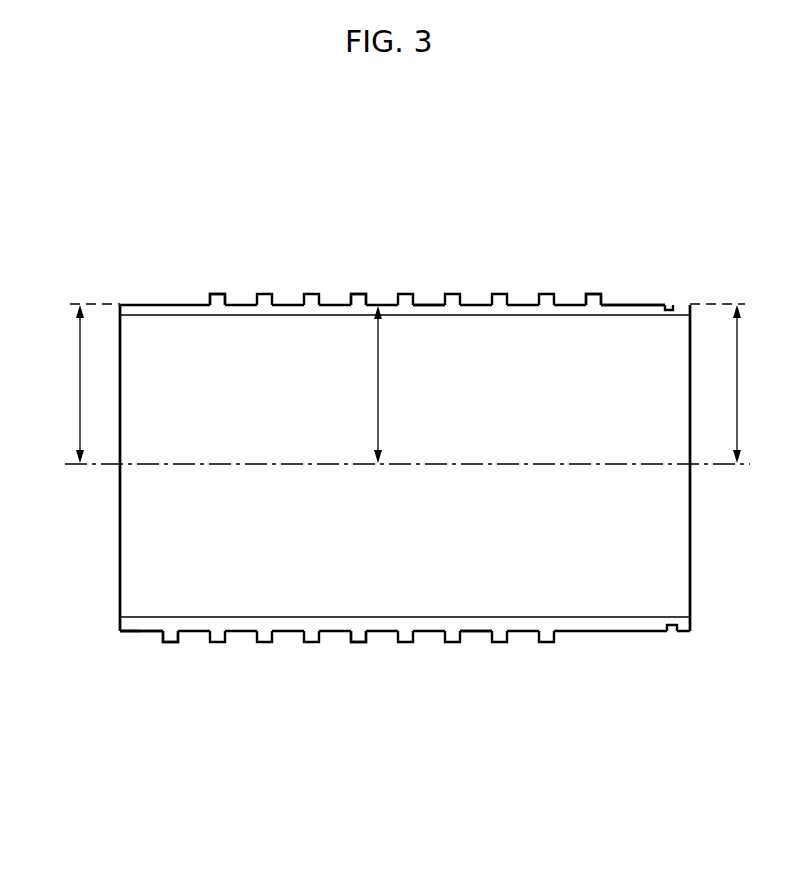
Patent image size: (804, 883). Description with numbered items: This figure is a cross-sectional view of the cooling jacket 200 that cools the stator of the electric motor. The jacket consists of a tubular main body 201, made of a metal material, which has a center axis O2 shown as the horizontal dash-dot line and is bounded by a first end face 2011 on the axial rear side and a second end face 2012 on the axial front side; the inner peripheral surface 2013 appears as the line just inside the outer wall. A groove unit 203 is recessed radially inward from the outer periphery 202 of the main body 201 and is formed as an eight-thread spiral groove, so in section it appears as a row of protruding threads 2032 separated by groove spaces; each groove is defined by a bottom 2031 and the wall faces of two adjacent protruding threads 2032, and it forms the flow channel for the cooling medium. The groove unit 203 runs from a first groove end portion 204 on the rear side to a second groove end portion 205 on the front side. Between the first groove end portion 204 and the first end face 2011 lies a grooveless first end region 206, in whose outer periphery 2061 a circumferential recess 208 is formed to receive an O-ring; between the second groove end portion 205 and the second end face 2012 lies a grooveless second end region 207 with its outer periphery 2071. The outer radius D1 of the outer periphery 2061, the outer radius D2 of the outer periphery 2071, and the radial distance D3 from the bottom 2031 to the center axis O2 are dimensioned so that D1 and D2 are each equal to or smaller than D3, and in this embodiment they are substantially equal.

The cooling jacket 200 is at (406, 421).
The main body 201 is at (472, 272).
The first end face 2011 is at (690, 368).
The second end face 2012 is at (120, 353).
The inner peripheral surface 2013 is at (530, 316).
The outer periphery 202 is at (217, 294).
The groove unit 203 is at (382, 282).
The bottom 2031 is at (372, 292).
The protruding thread 2032 is at (455, 292).
The first groove end portion 204 is at (612, 298).
The second groove end portion 205 is at (158, 642).
The first end region 206 is at (692, 272).
The outer periphery of first end region 2061 is at (645, 305).
The second end region 207 is at (162, 659).
The outer periphery of second end region 2071 is at (133, 633).
The recess 208 is at (670, 634).
The center axis O2 is at (272, 463).
The outer radius of first end region D1 is at (751, 384).
The outer radius of second end region D2 is at (67, 384).
The radial distance to groove bottom D3 is at (393, 384).